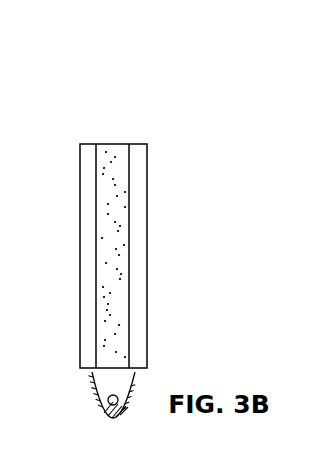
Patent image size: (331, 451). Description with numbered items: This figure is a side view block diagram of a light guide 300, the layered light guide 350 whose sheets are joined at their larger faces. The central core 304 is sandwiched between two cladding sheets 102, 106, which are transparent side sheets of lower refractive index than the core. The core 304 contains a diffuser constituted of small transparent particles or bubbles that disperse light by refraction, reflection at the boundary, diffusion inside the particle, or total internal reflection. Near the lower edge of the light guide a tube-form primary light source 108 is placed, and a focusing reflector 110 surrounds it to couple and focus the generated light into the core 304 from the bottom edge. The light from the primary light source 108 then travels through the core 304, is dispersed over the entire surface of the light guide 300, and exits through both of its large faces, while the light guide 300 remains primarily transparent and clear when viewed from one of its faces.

The light guide 300 is at (173, 210).
The light guide 350 is at (153, 65).
The cladding sheet 106 is at (90, 139).
The cladding sheet 102 is at (135, 139).
The core 304 is at (112, 139).
The primary light source 108 is at (104, 401).
The focusing reflector 110 is at (106, 417).